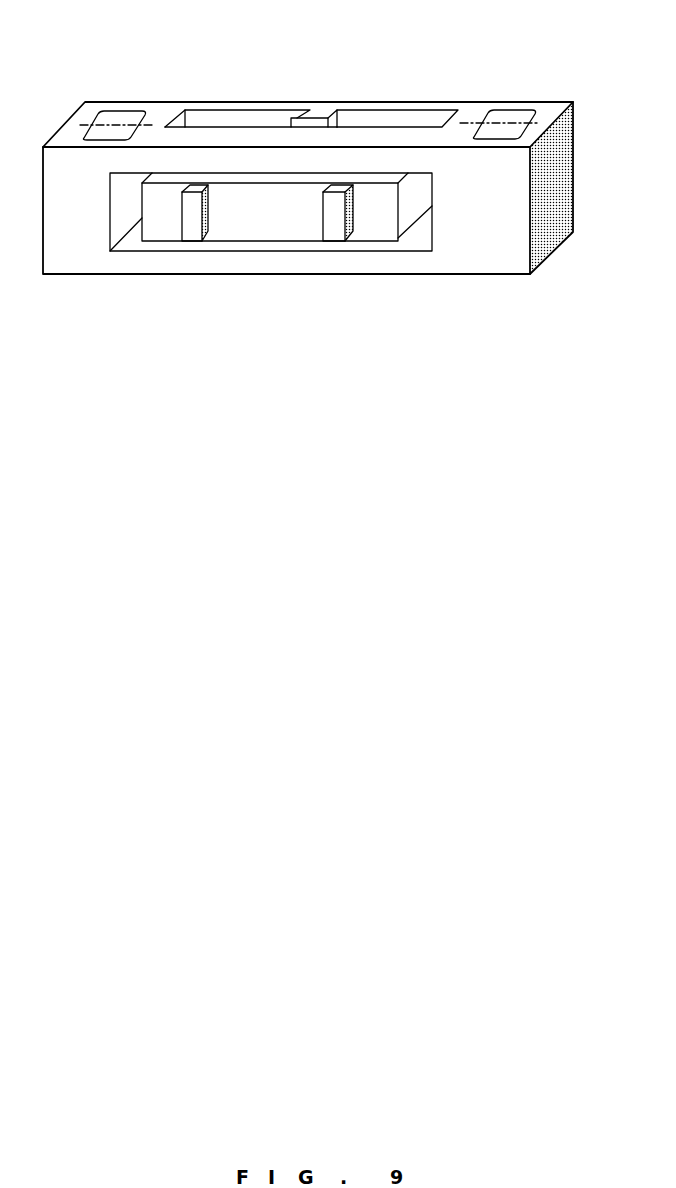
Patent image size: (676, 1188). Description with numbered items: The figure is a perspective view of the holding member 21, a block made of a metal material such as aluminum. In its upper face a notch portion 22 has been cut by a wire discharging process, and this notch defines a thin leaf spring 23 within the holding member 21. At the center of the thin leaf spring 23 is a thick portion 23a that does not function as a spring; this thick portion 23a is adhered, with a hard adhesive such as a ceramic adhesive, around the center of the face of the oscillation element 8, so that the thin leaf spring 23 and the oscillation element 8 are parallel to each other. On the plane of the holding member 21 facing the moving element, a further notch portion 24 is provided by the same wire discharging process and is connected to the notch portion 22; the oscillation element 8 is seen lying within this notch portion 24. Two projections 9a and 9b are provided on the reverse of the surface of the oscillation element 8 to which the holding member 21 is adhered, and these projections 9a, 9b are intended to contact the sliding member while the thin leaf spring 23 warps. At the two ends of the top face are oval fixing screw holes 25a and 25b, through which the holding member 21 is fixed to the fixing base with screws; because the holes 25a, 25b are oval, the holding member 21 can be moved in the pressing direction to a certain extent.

The holding member 21 is at (158, 117).
The notch portion 22 is at (400, 117).
The thin leaf spring 23 is at (250, 107).
The thick portion 23a is at (312, 115).
The notch portion 24 is at (418, 237).
The fixing screw hole 25a is at (112, 127).
The fixing screw hole 25b is at (510, 120).
The oscillation element 8 is at (270, 225).
The projection 9a is at (333, 232).
The projection 9b is at (192, 232).